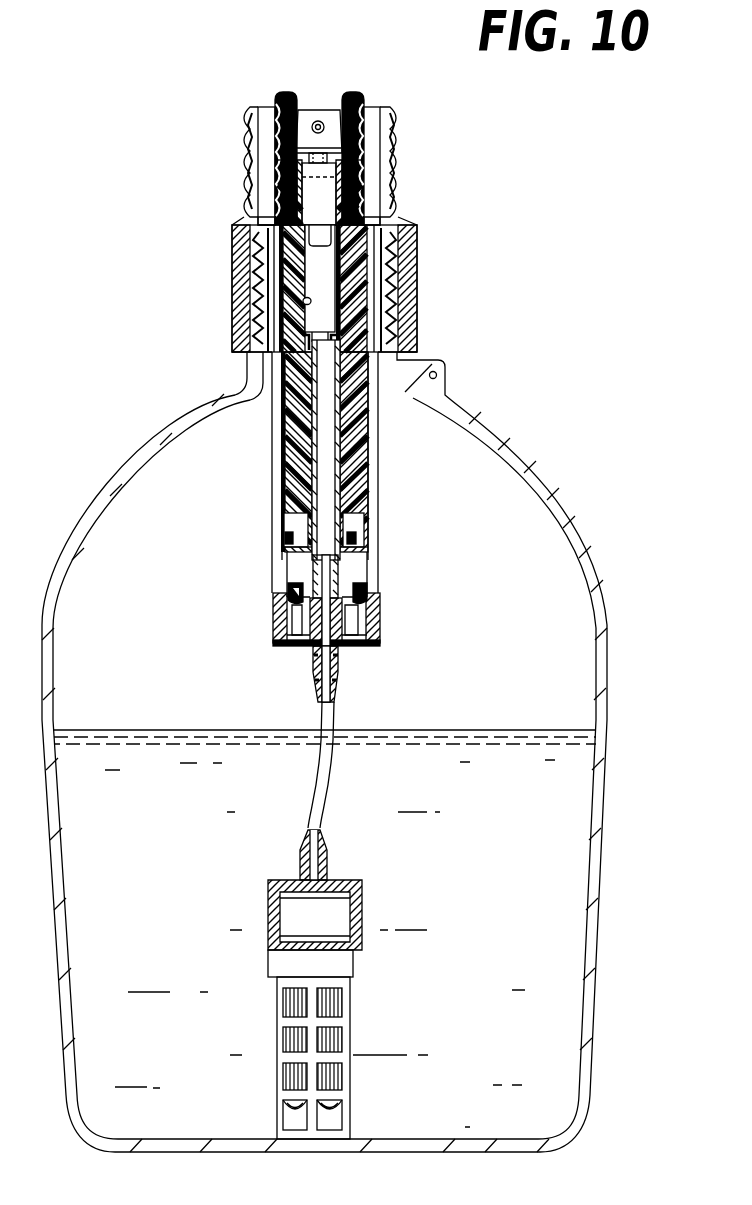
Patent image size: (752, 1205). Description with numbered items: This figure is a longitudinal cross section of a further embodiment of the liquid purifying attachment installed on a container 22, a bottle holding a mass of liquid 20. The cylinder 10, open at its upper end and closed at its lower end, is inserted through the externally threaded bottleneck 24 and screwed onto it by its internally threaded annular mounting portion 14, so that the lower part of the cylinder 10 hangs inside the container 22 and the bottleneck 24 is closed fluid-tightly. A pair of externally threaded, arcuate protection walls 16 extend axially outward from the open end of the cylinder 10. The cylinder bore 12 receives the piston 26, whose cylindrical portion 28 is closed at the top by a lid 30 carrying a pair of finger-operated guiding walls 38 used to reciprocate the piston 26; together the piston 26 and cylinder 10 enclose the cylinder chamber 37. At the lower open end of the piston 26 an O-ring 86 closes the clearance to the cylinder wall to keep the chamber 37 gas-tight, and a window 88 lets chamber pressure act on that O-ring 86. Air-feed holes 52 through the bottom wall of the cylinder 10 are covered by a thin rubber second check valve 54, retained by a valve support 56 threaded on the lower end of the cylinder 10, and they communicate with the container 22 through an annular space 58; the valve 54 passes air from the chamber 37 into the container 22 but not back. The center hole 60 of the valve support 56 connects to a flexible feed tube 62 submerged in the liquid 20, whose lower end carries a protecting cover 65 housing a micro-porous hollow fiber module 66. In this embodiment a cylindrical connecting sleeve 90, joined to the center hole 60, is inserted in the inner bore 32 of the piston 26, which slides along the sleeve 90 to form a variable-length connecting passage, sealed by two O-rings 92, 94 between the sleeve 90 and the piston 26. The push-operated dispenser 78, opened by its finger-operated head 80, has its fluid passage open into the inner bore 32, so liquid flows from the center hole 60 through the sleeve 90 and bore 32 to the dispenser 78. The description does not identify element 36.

The cylinder 10 is at (383, 438).
The cylinder bore 12 is at (293, 477).
The annular mounting portion 14 is at (235, 280).
The protection walls 16 is at (250, 152).
The liquid 20 is at (200, 914).
The container 22 is at (614, 802).
The bottleneck 24 is at (385, 255).
The piston 26 is at (373, 182).
The cylindrical portion 28 is at (353, 313).
The lid 30 is at (283, 164).
The inner bore 32 is at (310, 305).
The flange 36 is at (270, 217).
The cylinder chamber 37 is at (293, 563).
The guiding walls 38 is at (283, 92).
The air-feed holes 52 is at (290, 578).
The second check valve 54 is at (283, 620).
The valve support 56 is at (370, 618).
The annular space 58 is at (288, 628).
The center hole 60 is at (335, 645).
The feed tube 62 is at (323, 782).
The protecting cover 65 is at (350, 1110).
The hollow fiber module 66 is at (337, 1000).
The dispenser 78 is at (342, 203).
The operating head 80 is at (316, 110).
The O-ring 86 is at (283, 542).
The window 88 is at (350, 548).
The connecting sleeve 90 is at (337, 460).
The O-ring 92 is at (283, 355).
The O-ring 94 is at (303, 517).